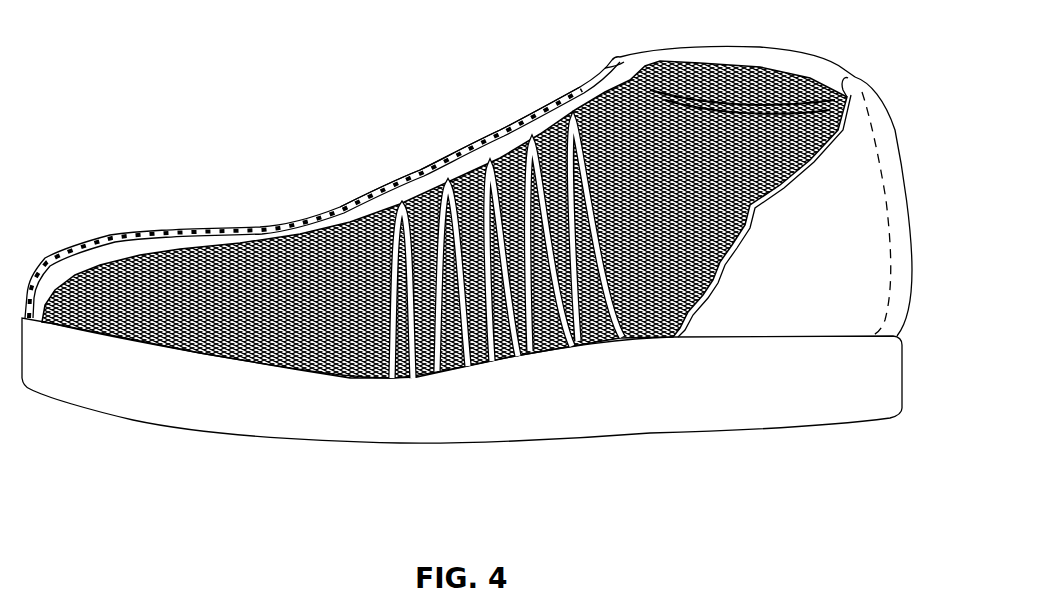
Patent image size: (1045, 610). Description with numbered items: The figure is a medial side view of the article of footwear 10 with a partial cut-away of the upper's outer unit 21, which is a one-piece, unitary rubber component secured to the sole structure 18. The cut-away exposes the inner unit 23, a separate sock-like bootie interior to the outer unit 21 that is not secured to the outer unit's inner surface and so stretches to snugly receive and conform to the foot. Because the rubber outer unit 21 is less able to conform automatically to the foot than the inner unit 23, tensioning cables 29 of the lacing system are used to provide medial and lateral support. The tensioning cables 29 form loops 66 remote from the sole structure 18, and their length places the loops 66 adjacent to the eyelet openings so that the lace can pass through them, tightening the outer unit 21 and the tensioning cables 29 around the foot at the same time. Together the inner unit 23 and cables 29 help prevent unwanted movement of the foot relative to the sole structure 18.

The article of footwear 10 is at (186, 42).
The sole structure 18 is at (183, 405).
The outer unit 21 is at (205, 230).
The inner unit 23 is at (597, 83).
The tensioning cables 29 is at (618, 338).
The loops 66 is at (407, 178).